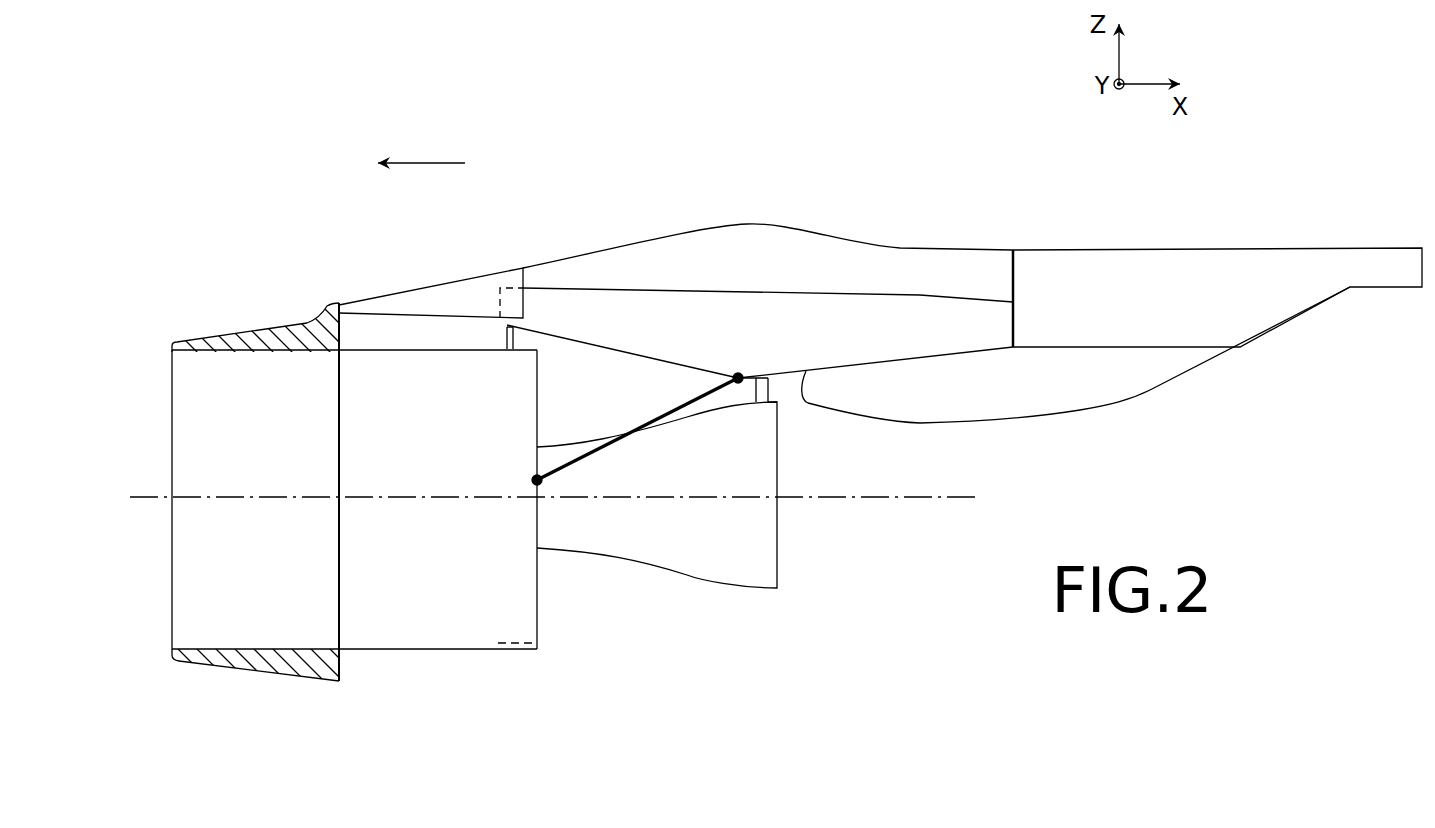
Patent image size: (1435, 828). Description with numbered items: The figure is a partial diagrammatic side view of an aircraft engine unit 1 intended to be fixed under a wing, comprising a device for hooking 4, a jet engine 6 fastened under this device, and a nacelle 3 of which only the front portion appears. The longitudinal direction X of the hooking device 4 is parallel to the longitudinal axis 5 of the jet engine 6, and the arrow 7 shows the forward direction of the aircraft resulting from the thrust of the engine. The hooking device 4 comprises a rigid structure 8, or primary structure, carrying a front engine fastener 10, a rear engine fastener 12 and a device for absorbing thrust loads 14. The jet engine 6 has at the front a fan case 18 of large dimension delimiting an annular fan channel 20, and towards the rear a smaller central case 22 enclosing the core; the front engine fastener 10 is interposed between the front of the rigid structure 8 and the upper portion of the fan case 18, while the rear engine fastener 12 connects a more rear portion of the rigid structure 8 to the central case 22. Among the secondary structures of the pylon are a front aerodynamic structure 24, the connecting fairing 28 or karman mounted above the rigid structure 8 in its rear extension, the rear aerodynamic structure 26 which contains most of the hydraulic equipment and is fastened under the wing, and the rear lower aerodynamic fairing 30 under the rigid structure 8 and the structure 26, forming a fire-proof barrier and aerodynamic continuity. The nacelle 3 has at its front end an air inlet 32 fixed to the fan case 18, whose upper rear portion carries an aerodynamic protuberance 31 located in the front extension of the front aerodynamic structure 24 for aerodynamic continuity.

The engine unit 1 is at (262, 410).
The nacelle 3 is at (255, 275).
The device for hooking 4 is at (768, 190).
The longitudinal axis 5 is at (148, 499).
The engine 6 is at (422, 657).
The arrow 7 is at (423, 162).
The rigid structure 8 is at (919, 302).
The front engine fastener 10 is at (497, 340).
The rear engine fastener 12 is at (770, 388).
The device for absorbing thrust loads 14 is at (606, 452).
The fan case 18 is at (353, 392).
The annular fan channel 20 is at (540, 643).
The central case 22 is at (580, 552).
The front aerodynamic structure 24 is at (467, 274).
The rear aerodynamic structure 26 is at (1118, 262).
The connecting fairing 28 is at (832, 240).
The rear lower aerodynamic fairing 30 is at (1104, 406).
The aerodynamic protuberance 31 is at (323, 322).
The air inlet 32 is at (190, 347).